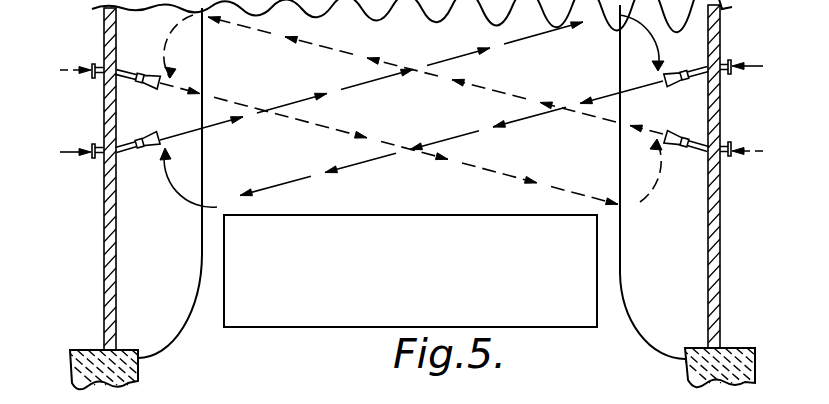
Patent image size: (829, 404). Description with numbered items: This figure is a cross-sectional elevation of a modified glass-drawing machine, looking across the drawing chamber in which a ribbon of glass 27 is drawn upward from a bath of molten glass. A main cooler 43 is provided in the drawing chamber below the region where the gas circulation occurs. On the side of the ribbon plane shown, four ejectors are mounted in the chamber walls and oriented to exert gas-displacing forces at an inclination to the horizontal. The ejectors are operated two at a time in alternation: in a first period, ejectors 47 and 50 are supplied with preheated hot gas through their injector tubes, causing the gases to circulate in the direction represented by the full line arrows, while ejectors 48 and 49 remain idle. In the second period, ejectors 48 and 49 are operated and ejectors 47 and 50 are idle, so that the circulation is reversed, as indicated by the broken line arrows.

The ribbon of glass 27 is at (426, 48).
The main cooler 43 is at (280, 328).
The ejector 47 is at (677, 73).
The ejector 48 is at (141, 73).
The ejector 49 is at (674, 146).
The ejector 50 is at (143, 148).